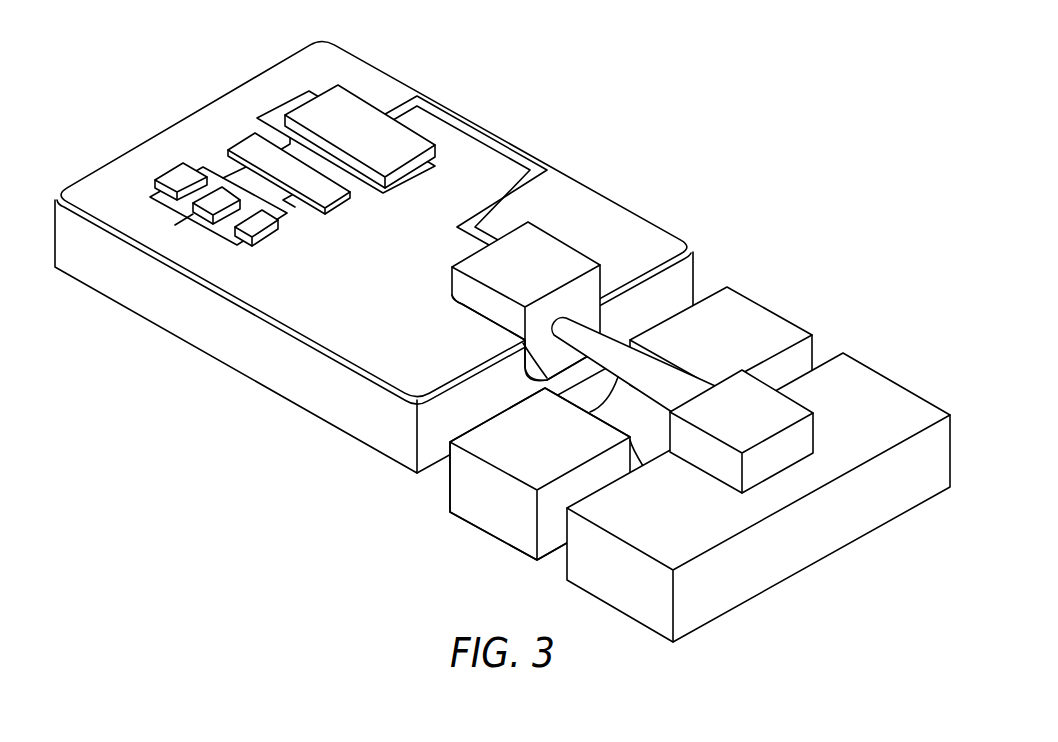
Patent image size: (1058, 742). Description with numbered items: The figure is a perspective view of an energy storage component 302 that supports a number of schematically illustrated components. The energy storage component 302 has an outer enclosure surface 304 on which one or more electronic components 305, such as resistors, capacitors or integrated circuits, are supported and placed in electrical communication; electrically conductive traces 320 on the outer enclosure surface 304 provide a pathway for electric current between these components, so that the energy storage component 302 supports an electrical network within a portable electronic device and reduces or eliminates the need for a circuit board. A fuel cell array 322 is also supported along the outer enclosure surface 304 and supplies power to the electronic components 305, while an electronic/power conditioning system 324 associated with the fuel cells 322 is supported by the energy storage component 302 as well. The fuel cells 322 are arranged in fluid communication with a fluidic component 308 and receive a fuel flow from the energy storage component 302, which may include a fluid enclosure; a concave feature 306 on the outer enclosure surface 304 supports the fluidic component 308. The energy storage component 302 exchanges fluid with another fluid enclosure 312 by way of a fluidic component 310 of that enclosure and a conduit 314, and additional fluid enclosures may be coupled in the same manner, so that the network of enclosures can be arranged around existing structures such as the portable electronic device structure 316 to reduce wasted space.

The energy storage component 302 is at (661, 245).
The outer enclosure surface 304 is at (134, 200).
The electronic components 305 is at (161, 159).
The concave feature 306 is at (522, 343).
The fluidic component 308 is at (556, 248).
The fluidic component 310 is at (787, 410).
The fluid enclosure 312 is at (883, 392).
The conduit 314 is at (642, 370).
The portable electronic device structure 316 is at (755, 318).
The electrically conductive traces 320 is at (405, 183).
The fuel cell array 322 is at (324, 100).
The electronic/power conditioning system 324 is at (248, 146).